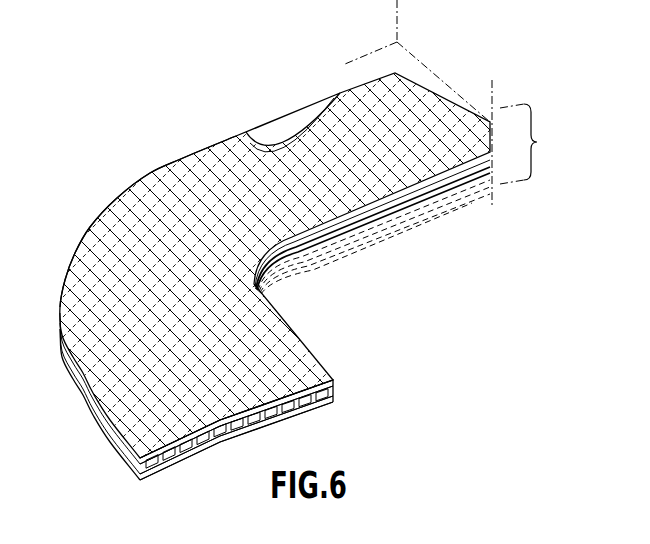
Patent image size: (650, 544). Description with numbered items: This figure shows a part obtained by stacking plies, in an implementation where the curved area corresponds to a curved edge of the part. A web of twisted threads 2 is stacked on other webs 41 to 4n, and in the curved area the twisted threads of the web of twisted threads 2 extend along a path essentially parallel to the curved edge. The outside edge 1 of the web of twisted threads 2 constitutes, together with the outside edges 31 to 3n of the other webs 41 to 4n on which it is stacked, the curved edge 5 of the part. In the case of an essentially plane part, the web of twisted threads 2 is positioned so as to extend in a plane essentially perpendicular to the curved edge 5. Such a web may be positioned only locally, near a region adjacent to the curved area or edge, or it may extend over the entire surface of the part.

The outside edge 1 is at (102, 116).
The web of twisted threads 2 is at (252, 128).
The outside edge of web 4n 3n is at (476, 107).
The web 4n is at (470, 204).
The curved edge 5 is at (84, 233).
The outside edge of web 41 31 is at (333, 379).
The web 41 is at (334, 400).